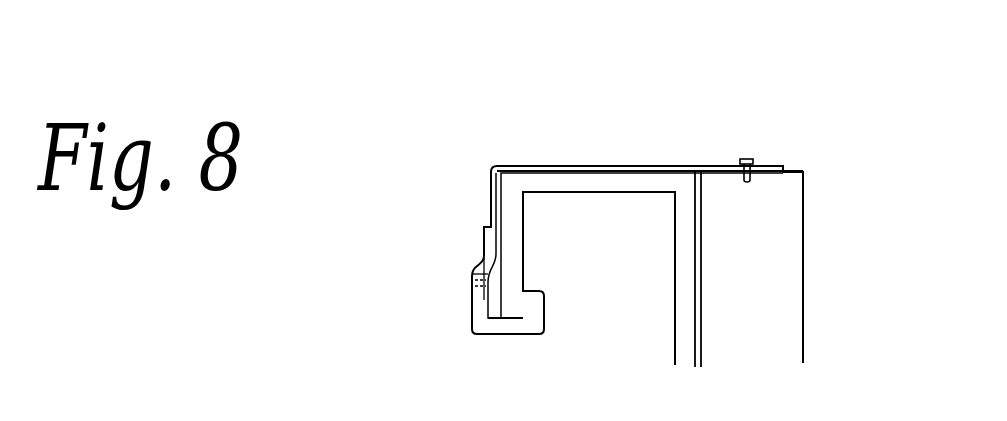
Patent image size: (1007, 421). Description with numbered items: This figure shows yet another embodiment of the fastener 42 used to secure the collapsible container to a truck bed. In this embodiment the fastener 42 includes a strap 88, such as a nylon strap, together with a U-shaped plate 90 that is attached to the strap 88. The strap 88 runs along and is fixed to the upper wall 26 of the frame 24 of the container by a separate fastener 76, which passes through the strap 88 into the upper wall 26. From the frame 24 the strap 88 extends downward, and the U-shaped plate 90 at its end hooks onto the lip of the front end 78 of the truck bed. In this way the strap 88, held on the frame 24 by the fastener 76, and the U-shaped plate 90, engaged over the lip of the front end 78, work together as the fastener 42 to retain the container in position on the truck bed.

The frame 24 is at (767, 250).
The upper wall 26 is at (798, 172).
The fastener 42 is at (694, 167).
The fastener 76 is at (747, 158).
The front end 78 is at (685, 306).
The strap 88 is at (545, 163).
The U-shaped plate 90 is at (488, 314).